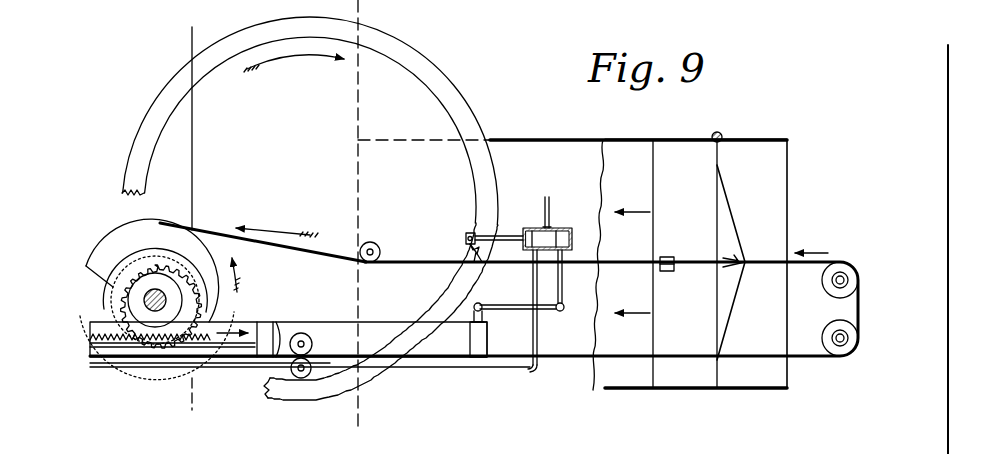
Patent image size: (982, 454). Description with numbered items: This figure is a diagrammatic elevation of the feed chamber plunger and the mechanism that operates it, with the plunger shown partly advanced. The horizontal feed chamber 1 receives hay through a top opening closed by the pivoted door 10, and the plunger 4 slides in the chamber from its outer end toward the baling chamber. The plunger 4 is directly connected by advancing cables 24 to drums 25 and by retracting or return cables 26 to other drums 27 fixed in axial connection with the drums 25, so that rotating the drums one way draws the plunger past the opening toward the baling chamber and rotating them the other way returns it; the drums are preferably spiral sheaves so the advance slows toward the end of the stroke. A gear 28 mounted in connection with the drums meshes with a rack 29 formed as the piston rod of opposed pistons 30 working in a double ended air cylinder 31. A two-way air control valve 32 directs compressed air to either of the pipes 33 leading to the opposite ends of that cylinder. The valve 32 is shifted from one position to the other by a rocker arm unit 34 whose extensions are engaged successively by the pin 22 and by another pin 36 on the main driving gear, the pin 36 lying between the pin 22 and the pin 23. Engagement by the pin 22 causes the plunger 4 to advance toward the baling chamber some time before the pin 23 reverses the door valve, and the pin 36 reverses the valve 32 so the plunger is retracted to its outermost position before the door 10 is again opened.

The feed chamber 1 is at (738, 165).
The plunger 4 is at (696, 221).
The door 10 is at (668, 139).
The pin 22 is at (463, 283).
The pin 23 is at (470, 113).
The advancing cables 24 is at (412, 260).
The drums 25 is at (105, 252).
The retracting or return cables 26 is at (812, 360).
The drums 27 is at (157, 383).
The gear 28 is at (143, 270).
The rack 29 is at (117, 342).
The opposed pistons 30 is at (259, 338).
The double ended air cylinder 31 is at (350, 340).
The two-way air control valve 32 is at (560, 230).
The pipes 33 is at (553, 312).
The rocker arm unit 34 is at (482, 240).
The pin 36 is at (495, 210).